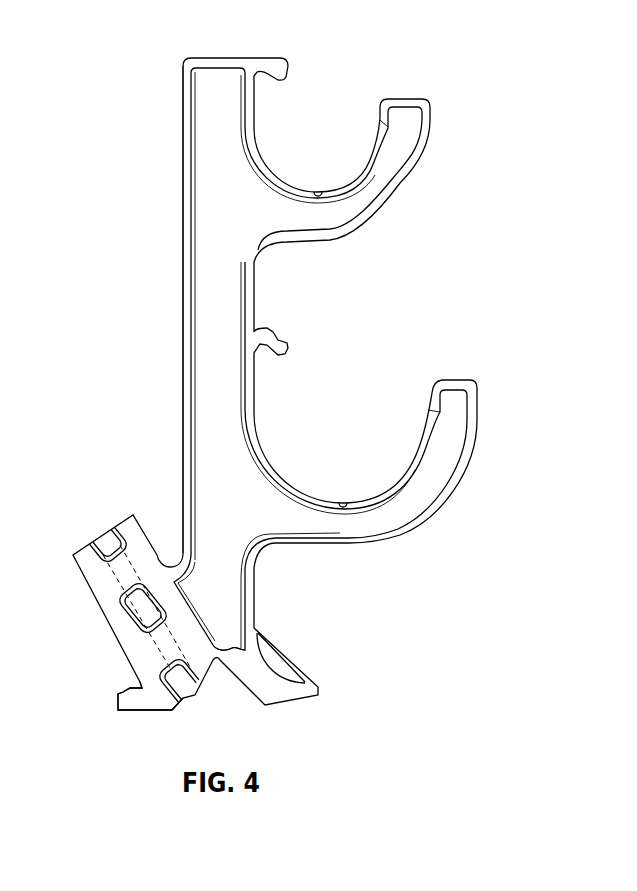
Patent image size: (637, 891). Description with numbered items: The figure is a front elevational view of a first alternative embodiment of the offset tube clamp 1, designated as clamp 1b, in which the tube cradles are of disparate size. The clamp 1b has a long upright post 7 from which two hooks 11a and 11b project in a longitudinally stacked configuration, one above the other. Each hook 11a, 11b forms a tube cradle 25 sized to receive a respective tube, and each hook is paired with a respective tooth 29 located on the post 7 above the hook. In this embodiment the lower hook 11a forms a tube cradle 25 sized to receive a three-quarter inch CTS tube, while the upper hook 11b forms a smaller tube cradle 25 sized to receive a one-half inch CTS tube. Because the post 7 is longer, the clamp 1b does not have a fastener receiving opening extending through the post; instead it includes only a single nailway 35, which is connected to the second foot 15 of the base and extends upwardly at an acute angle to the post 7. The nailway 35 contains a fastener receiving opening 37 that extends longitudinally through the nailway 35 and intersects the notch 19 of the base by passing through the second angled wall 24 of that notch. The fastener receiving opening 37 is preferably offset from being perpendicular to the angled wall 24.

The clamp 1 is at (122, 142).
The clamp 1b is at (182, 234).
The post 7 is at (181, 337).
The tooth 29 is at (287, 66).
The tube cradle 25 is at (264, 166).
The hook 11a is at (448, 502).
The hook 11b is at (418, 177).
The nailway 35 is at (97, 600).
The fastener receiving opening 37 is at (121, 585).
The second foot 15 is at (128, 692).
The second angled wall 24 is at (214, 666).
The notch 19 is at (233, 681).